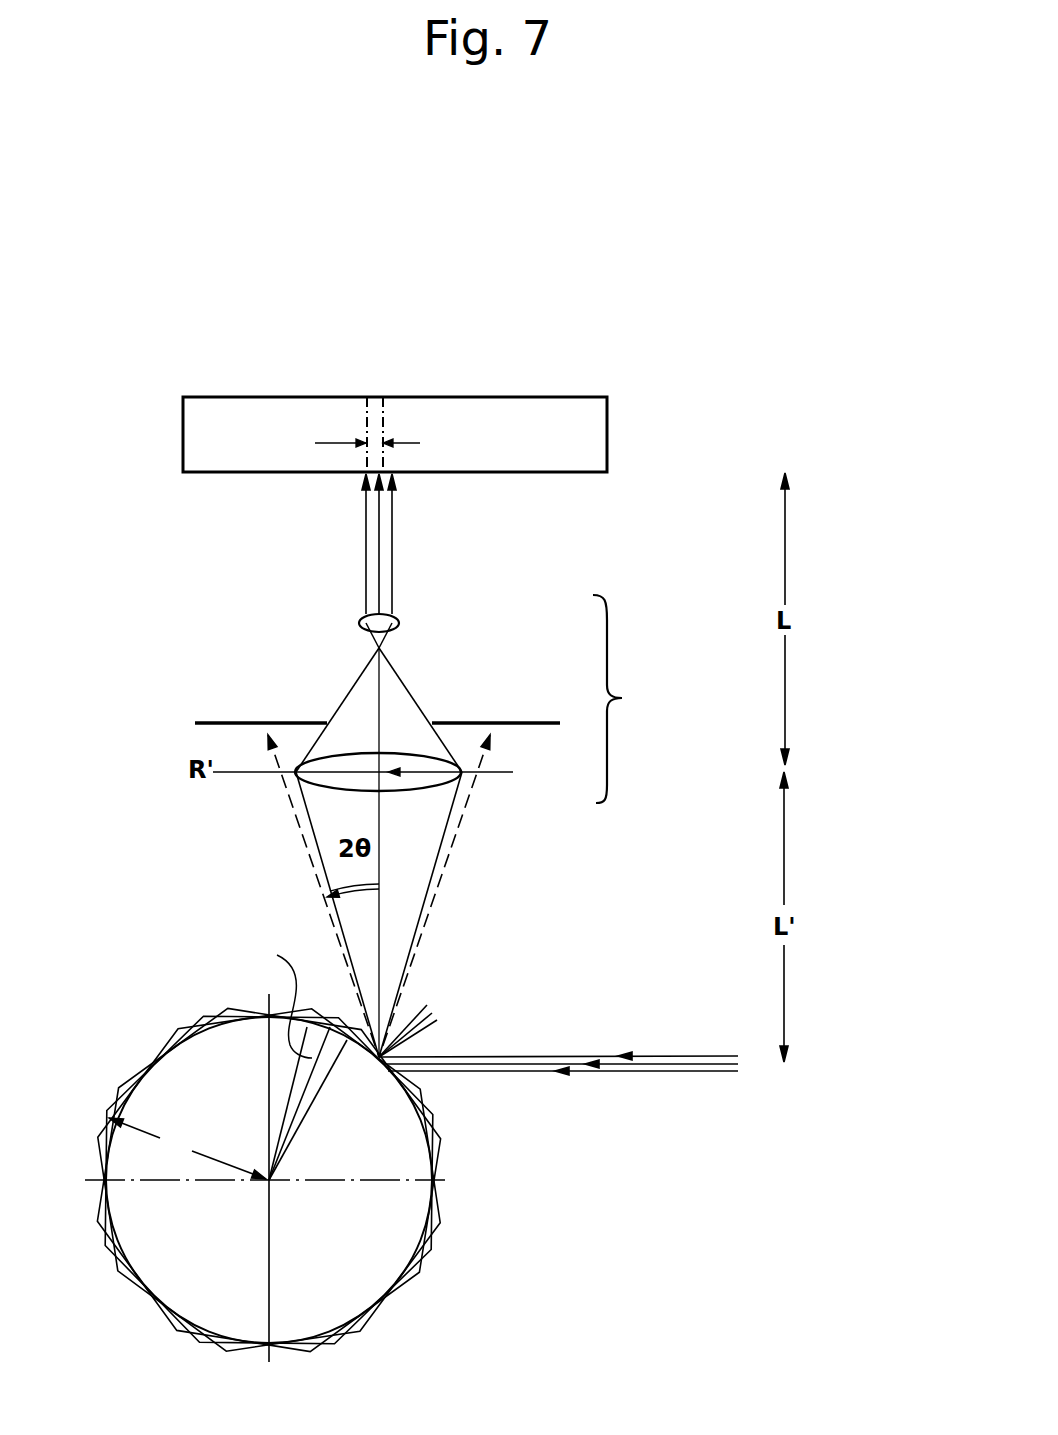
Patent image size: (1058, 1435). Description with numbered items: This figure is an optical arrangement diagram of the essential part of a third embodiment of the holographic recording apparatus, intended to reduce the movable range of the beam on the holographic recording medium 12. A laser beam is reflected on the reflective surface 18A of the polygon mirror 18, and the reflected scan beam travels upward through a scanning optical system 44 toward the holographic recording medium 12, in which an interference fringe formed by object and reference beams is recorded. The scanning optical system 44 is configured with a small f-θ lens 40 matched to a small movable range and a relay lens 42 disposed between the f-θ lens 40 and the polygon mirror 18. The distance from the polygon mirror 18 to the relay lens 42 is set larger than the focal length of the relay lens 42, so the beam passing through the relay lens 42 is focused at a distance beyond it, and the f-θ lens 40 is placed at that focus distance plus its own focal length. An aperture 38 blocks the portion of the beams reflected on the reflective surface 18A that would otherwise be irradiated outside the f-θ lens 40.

The holographic recording medium 12 is at (607, 427).
The f-θ lens 40 is at (398, 622).
The aperture 38 is at (538, 722).
The relay lens 42 is at (452, 780).
The scanning optical system 44 is at (628, 699).
The polygon mirror 18 is at (438, 1204).
The reflective surface 18A is at (410, 1082).